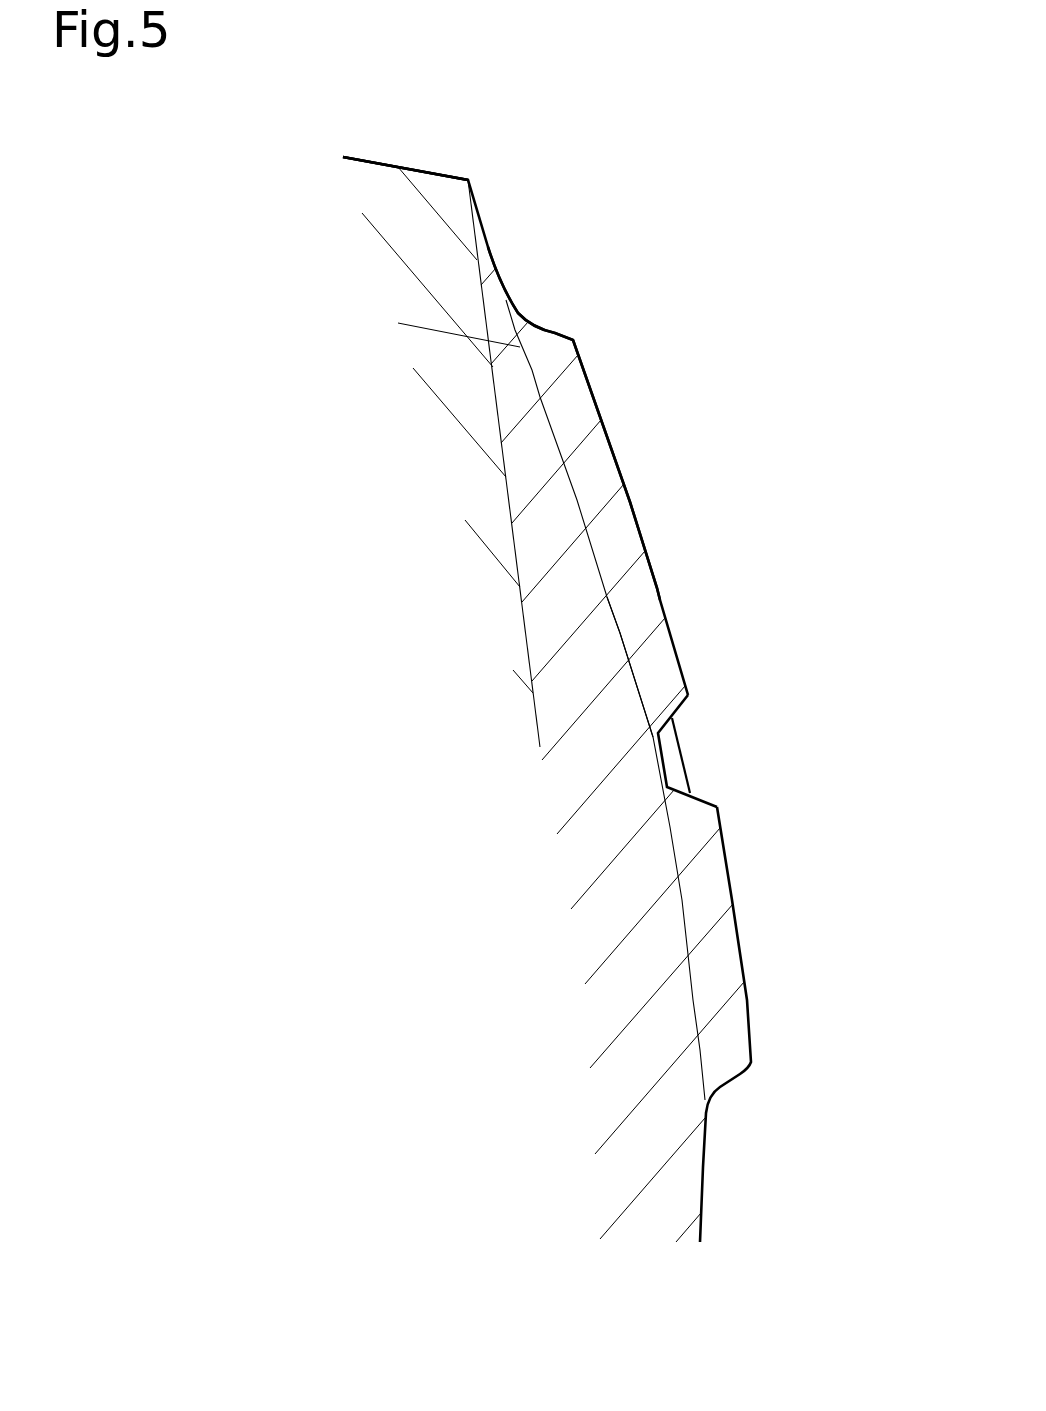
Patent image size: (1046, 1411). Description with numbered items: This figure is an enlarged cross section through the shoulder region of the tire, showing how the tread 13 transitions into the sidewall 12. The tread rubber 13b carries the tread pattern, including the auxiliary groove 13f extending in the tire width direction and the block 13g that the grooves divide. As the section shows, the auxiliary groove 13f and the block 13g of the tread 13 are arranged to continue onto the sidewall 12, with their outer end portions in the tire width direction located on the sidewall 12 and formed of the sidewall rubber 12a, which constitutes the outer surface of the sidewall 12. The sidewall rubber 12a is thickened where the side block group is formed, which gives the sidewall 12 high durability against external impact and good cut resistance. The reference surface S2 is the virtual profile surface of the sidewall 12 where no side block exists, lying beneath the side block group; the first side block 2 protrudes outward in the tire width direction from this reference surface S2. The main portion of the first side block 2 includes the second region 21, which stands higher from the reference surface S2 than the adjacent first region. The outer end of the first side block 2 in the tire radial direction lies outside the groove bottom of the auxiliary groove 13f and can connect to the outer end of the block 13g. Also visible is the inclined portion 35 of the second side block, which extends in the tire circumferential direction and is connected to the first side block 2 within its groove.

The first side block 2 is at (644, 507).
The second region 21 is at (659, 588).
The sidewall 12 is at (788, 643).
The sidewall rubber 12a is at (556, 292).
The tread 13 is at (373, 152).
The block 13g is at (419, 163).
The tread rubber 13b is at (356, 250).
The auxiliary groove 13f is at (416, 292).
The reference surface S2 is at (637, 684).
The inclined portion 35 is at (687, 752).